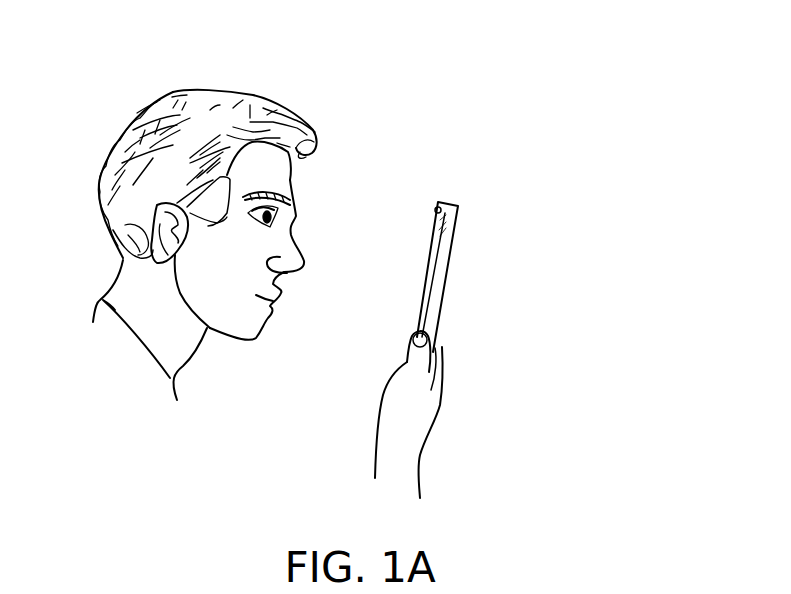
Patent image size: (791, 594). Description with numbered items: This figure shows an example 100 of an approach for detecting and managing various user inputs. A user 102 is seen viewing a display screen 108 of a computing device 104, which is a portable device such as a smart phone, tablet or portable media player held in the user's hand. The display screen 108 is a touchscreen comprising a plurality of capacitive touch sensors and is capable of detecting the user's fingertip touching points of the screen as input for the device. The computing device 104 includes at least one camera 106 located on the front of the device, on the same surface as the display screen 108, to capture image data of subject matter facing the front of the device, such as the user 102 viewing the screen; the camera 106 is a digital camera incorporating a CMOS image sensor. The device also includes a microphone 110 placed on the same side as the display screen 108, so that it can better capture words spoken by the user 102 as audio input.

The example 100 is at (647, 155).
The user 102 is at (91, 398).
The computing device 104 is at (458, 217).
The camera 106 is at (440, 203).
The display screen 108 is at (427, 277).
The microphone 110 is at (407, 362).